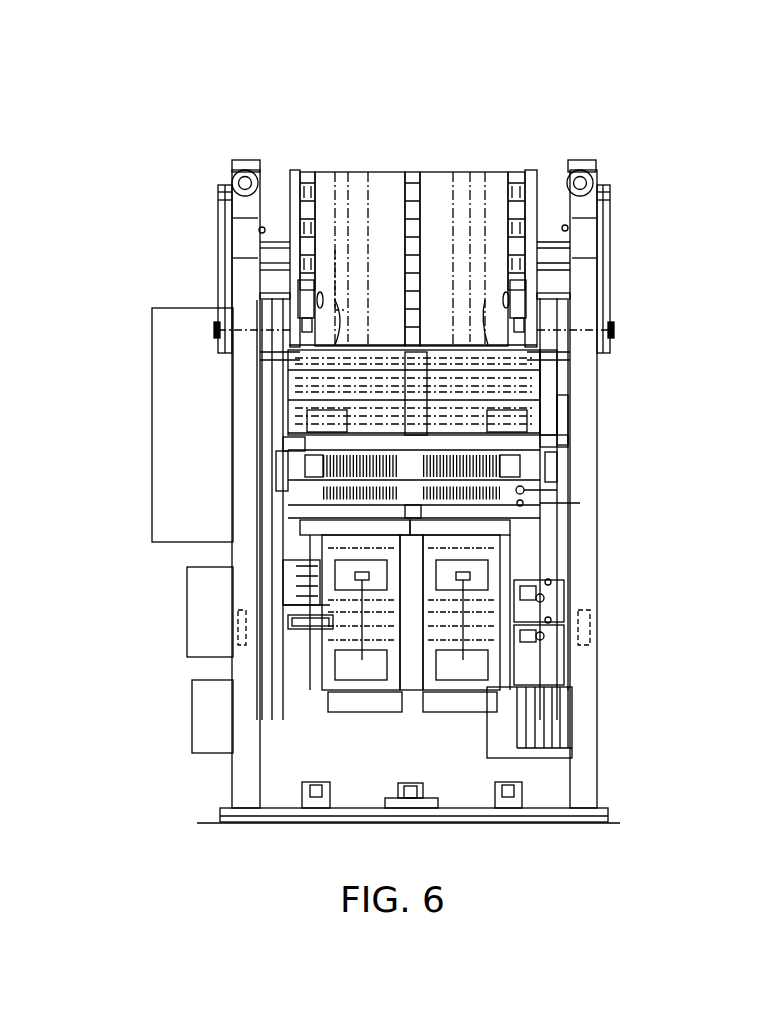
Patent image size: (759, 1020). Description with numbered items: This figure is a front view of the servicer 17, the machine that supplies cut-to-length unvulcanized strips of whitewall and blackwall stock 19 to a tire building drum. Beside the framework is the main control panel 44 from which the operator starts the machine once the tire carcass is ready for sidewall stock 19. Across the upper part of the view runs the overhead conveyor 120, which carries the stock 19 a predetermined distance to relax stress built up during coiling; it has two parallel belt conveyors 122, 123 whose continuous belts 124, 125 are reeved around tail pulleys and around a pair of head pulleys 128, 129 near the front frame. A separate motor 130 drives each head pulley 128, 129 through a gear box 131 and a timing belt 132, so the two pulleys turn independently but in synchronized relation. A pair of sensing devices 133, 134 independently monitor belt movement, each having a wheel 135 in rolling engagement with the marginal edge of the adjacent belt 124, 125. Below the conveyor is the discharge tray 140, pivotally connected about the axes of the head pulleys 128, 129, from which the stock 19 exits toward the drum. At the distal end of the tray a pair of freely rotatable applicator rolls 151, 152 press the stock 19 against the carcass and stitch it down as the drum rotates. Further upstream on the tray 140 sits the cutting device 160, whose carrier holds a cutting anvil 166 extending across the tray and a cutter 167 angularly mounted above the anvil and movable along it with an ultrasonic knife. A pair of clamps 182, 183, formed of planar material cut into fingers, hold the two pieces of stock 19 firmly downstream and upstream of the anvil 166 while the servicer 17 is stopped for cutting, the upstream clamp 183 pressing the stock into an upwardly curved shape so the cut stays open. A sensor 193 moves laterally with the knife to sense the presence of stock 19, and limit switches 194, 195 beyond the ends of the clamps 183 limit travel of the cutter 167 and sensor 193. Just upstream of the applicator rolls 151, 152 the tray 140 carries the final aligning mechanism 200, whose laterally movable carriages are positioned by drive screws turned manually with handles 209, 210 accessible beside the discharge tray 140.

The servicer 17 is at (616, 218).
The whitewall and blackwall stock 19 is at (345, 172).
The main control panel 44 is at (152, 460).
The overhead conveyor 120 is at (522, 160).
The belt conveyor 122 is at (312, 172).
The belt conveyor 123 is at (516, 178).
The continuous belt 124 is at (388, 182).
The continuous belt 125 is at (495, 185).
The head pulley 128 is at (300, 385).
The head pulley 129 is at (560, 365).
The motor 130 is at (238, 160).
The gear box 131 is at (262, 172).
The timing belt 132 is at (218, 245).
The sensing device 133 is at (318, 300).
The sensing device 134 is at (520, 300).
The wheel 135 is at (320, 312).
The discharge tray 140 is at (272, 490).
The applicator roll 151 is at (455, 712).
The applicator roll 152 is at (372, 712).
The cutting device 160 is at (560, 470).
The cutting anvil 166 is at (585, 490).
The cutter 167 is at (580, 503).
The clamp 182 is at (366, 505).
The clamp 183 is at (358, 440).
The sensor 193 is at (578, 410).
The limit switch 194 is at (580, 445).
The limit switch 195 is at (290, 440).
The final aligning mechanism 200 is at (290, 606).
The handle 209 is at (545, 636).
The handle 210 is at (547, 600).